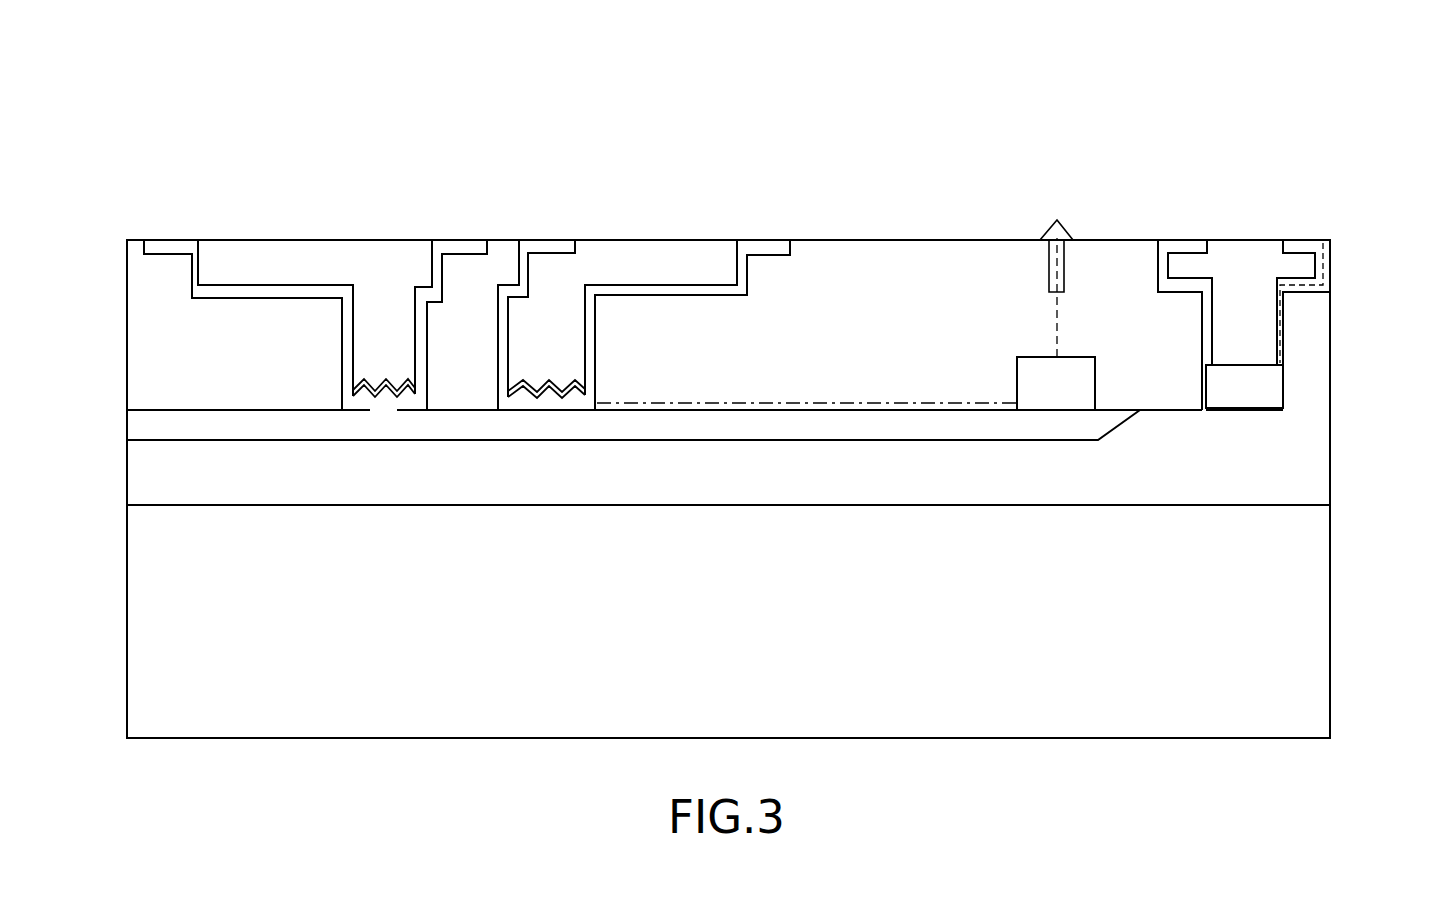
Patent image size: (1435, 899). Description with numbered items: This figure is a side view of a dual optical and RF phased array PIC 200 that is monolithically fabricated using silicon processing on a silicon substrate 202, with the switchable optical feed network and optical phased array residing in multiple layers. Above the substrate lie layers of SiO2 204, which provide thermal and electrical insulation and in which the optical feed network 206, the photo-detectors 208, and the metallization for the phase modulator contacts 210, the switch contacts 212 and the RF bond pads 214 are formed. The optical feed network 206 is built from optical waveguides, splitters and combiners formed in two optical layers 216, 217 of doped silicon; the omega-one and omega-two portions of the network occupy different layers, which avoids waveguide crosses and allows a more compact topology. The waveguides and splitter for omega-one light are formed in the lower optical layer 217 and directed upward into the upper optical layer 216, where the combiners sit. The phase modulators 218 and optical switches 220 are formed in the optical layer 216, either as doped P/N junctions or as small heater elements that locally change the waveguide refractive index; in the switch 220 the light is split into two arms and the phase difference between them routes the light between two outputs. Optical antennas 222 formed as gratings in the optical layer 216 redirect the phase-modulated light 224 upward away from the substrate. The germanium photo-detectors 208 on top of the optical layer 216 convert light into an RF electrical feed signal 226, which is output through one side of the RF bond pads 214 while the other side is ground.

The dual optical and RF phased array PIC 200 is at (1281, 88).
The silicon substrate 202 is at (1330, 590).
The layers of SiO2 204 is at (863, 343).
The optical feed network 206 is at (660, 384).
The photo-detectors 208 is at (1193, 385).
The phase modulator contacts 210 is at (180, 235).
The switch contacts 212 is at (547, 234).
The RF bond pads 214 is at (1173, 234).
The optical layer 216 is at (114, 390).
The optical layer 217 is at (114, 426).
The phase modulators 218 is at (385, 368).
The optical switches 220 is at (551, 363).
The optical antennas 222 is at (1017, 372).
The light 224 is at (862, 169).
The electrical feed signal 226 is at (1341, 284).